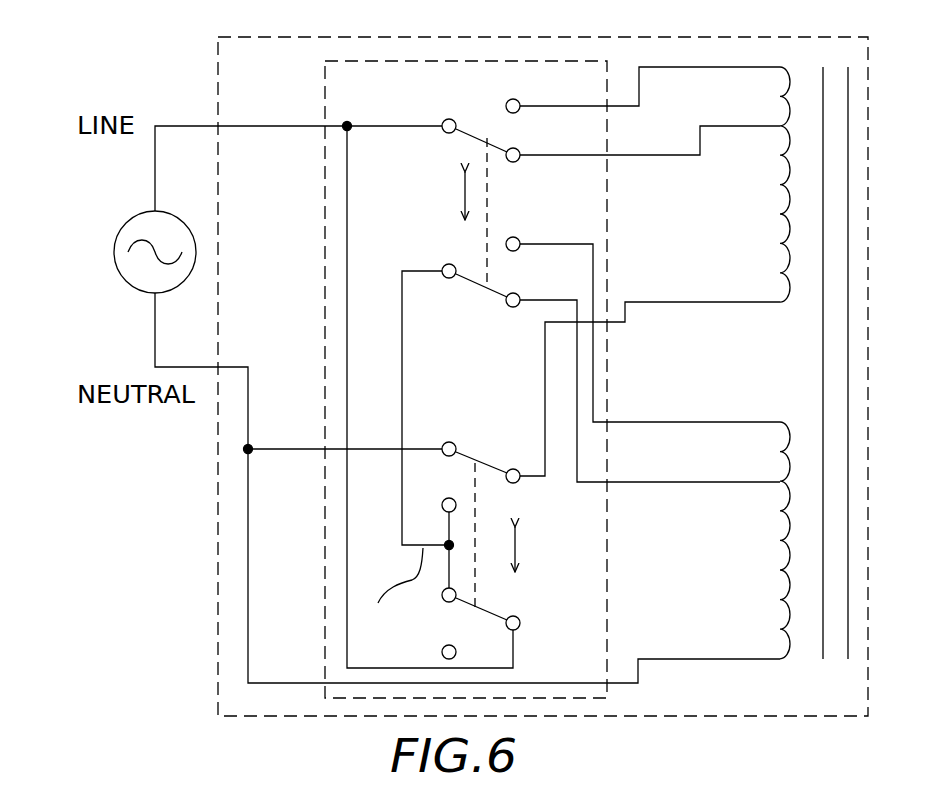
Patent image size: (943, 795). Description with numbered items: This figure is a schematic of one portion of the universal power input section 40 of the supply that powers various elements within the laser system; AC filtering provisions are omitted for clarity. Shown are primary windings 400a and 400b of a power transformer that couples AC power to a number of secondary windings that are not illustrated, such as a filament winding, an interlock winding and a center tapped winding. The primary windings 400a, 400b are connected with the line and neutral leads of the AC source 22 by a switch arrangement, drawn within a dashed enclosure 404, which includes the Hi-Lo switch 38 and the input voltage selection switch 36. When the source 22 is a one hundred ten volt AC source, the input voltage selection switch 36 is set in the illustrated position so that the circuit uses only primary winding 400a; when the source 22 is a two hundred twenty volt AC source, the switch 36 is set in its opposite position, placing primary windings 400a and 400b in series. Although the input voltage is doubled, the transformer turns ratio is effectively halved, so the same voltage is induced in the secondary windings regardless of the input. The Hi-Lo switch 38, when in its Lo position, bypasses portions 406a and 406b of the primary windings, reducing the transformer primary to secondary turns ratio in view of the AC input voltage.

The AC source 22 is at (119, 232).
The input voltage selection switch 36 is at (468, 452).
The Hi-Lo switch 38 is at (480, 280).
The universal power input section 40 is at (215, 617).
The switch assembly 404 is at (322, 95).
The primary winding 400a is at (783, 75).
The primary winding 400b is at (788, 426).
The portion of primary winding 406a is at (780, 97).
The portion of primary winding 406b is at (780, 452).